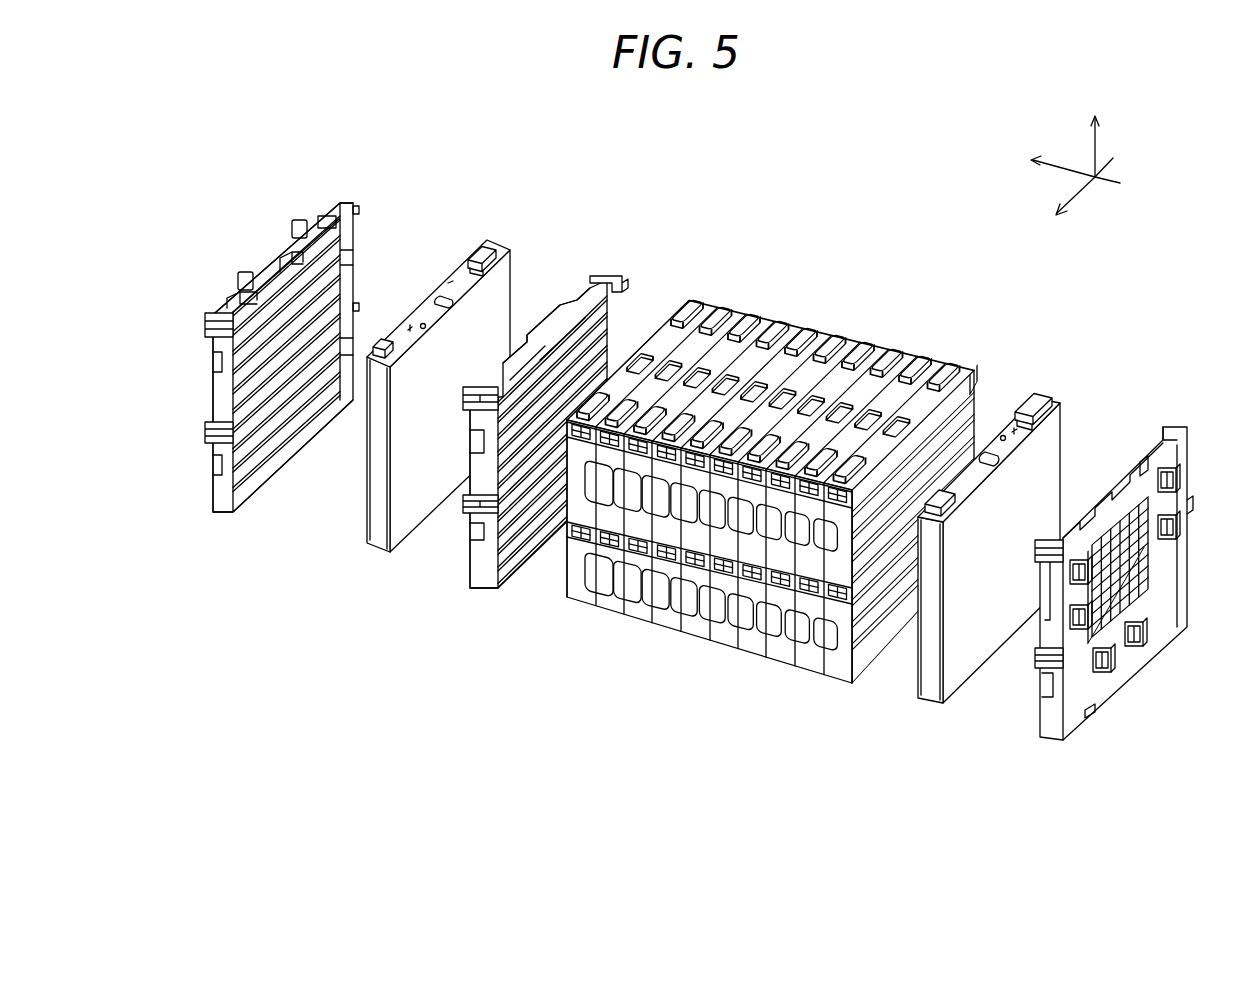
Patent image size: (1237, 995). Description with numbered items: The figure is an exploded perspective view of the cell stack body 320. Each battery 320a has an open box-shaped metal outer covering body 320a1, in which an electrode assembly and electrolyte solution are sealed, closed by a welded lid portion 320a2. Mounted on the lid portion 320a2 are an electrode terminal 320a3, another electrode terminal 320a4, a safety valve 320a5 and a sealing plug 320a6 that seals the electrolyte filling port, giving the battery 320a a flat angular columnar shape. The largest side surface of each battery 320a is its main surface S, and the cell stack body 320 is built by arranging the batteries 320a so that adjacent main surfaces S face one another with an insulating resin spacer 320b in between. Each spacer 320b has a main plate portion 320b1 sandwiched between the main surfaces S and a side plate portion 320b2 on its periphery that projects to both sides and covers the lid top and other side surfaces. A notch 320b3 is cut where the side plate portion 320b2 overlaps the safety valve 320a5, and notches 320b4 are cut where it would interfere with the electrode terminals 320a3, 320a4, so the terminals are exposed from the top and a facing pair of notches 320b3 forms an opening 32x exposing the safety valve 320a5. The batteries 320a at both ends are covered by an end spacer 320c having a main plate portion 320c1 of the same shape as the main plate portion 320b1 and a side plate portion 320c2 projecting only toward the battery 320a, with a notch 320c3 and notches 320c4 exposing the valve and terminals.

The cell stack body 320 is at (826, 139).
The battery 320a is at (443, 380).
The outer covering body 320a1 is at (511, 290).
The lid portion 320a2 is at (418, 318).
The electrode terminal 320a3 is at (487, 250).
The electrode terminal 320a4 is at (367, 356).
The safety valve 320a5 is at (445, 300).
The sealing plug 320a6 is at (425, 322).
The main surface S is at (400, 525).
The spacer 320b is at (583, 444).
The main plate portion 320b1 is at (527, 517).
The side plate portion 320b2 is at (488, 578).
The notch 320b3 is at (555, 292).
The notches 320b4 is at (612, 292).
The opening 32x is at (750, 378).
The spacer 320c is at (1085, 687).
The main plate portion 320c1 is at (240, 465).
The side plate portion 320c2 is at (223, 500).
The notch 320c3 is at (287, 262).
The notches 320c4 is at (323, 213).